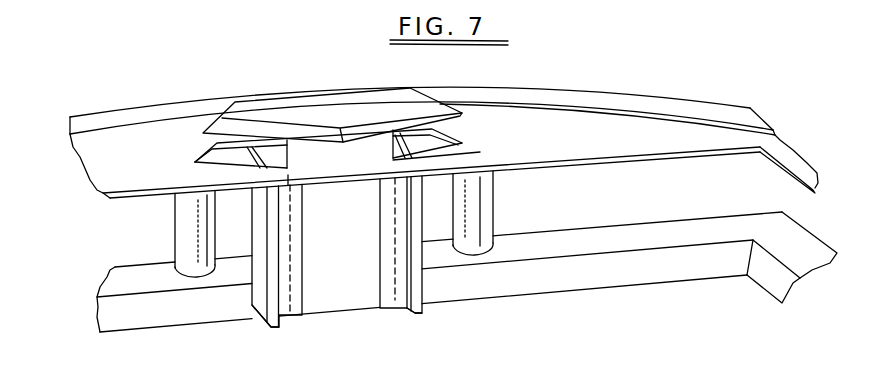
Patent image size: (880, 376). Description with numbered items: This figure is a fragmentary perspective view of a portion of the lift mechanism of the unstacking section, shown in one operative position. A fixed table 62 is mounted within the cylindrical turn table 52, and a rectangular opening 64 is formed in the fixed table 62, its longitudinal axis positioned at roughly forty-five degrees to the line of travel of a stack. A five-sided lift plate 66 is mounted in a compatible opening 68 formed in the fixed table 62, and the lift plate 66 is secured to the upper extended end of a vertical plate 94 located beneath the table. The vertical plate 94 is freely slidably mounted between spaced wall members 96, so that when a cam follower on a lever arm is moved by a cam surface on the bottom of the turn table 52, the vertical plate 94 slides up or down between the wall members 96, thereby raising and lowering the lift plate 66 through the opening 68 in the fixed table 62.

The turn table 52 is at (623, 100).
The fixed table 62 is at (657, 132).
The rectangular opening 64 is at (643, 160).
The lift plate 66 is at (341, 107).
The opening 68 is at (450, 135).
The vertical plate 94 is at (338, 160).
The wall member 96 is at (292, 320).